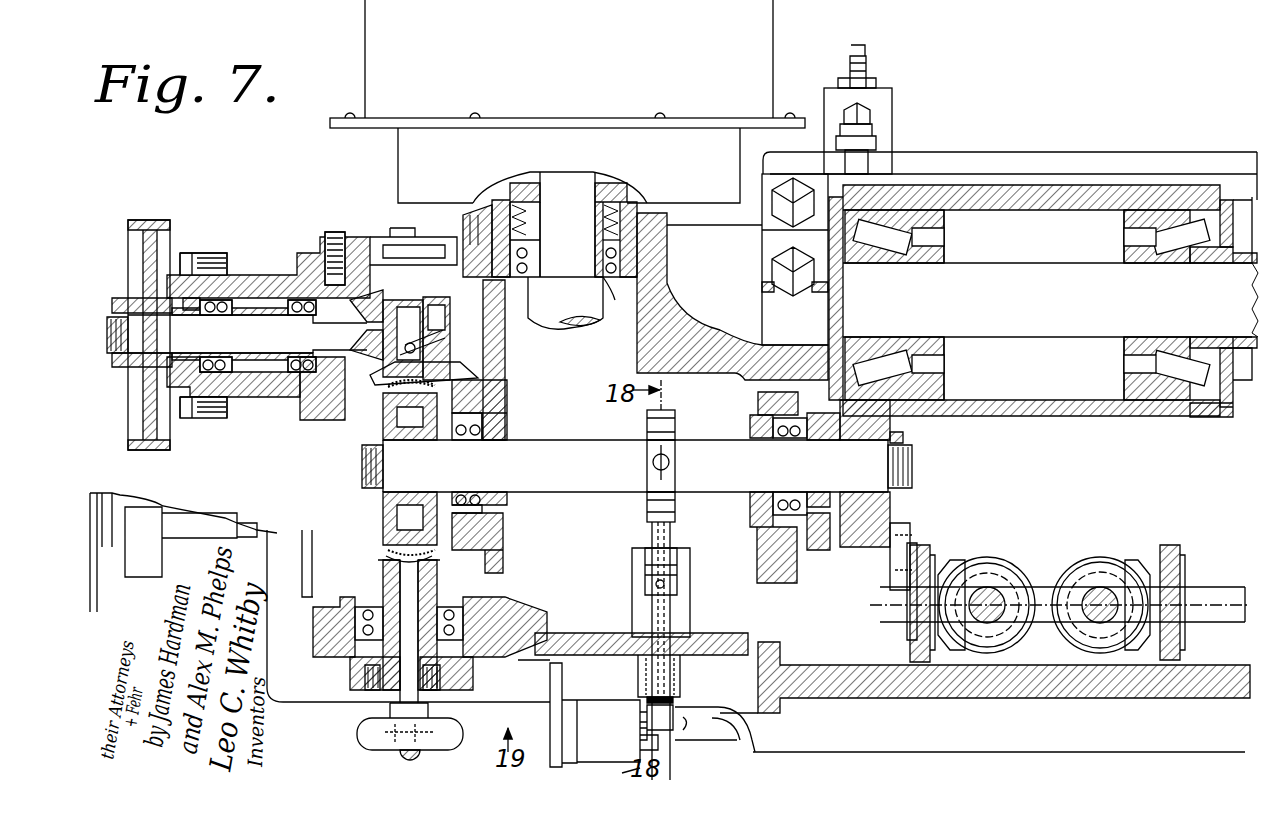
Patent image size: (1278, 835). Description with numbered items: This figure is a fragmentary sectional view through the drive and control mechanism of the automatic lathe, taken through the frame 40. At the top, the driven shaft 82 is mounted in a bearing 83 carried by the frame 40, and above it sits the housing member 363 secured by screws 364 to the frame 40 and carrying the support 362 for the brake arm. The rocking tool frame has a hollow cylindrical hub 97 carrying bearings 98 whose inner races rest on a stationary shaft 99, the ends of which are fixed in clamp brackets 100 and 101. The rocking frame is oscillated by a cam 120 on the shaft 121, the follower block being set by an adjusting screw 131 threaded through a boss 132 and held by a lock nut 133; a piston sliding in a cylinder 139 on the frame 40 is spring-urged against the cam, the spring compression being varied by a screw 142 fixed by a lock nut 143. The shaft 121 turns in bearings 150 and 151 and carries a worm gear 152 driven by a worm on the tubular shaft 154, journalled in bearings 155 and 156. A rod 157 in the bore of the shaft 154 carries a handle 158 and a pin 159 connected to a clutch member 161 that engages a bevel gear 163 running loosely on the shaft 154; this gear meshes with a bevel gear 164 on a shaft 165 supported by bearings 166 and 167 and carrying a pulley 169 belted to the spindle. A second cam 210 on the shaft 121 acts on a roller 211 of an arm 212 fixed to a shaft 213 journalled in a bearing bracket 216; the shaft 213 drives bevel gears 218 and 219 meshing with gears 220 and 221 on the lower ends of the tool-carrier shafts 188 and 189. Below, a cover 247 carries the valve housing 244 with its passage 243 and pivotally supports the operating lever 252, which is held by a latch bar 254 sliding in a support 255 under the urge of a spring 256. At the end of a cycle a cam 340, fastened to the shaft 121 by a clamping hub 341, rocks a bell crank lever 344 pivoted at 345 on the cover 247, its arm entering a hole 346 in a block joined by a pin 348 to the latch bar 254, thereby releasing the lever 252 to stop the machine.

The frame 40 is at (500, 372).
The shaft 82 is at (566, 188).
The bearing 83 is at (618, 293).
The hollow cylindrical hub 97 is at (1012, 186).
The bearings 98 is at (872, 355).
The stationary shaft 99 is at (1030, 268).
The clamp bracket 100 is at (770, 302).
The clamp bracket 101 is at (1245, 380).
The cam 120 is at (840, 547).
The shaft 121 is at (572, 484).
The adjusting screw 131 is at (870, 118).
The boss 132 is at (870, 168).
The lock nut 133 is at (870, 146).
The cylinder 139 is at (880, 100).
The screw 142 is at (862, 48).
The lock nut 143 is at (868, 78).
The bearing 150 is at (500, 425).
The bearing 151 is at (758, 522).
The worm gear 152 is at (410, 513).
The shaft 154 is at (385, 565).
The bearing 155 is at (462, 246).
The bearing 156 is at (456, 604).
The rod 157 is at (405, 582).
The handle 158 is at (368, 740).
The pin 159 is at (415, 345).
The clutch member 161 is at (432, 343).
The bevel gear 163 is at (444, 370).
The bevel gear 164 is at (362, 305).
The shaft 165 is at (232, 330).
The bearing 166 is at (205, 300).
The bearing 167 is at (293, 300).
The pulley 169 is at (166, 224).
The shaft 188 is at (1098, 592).
The shaft 189 is at (986, 592).
The cam 210 is at (900, 434).
The roller 211 is at (882, 565).
The arm 212 is at (898, 538).
The shaft 213 is at (1046, 620).
The bearing bracket 216 is at (925, 545).
The bevel gear 218 is at (1140, 562).
The bevel gear 219 is at (952, 560).
The gear 220 is at (1120, 560).
The gear 221 is at (1018, 566).
The passage 243 is at (670, 462).
The valve housing 244 is at (600, 708).
The cover 247 is at (613, 638).
The operating lever 252 is at (705, 728).
The latch bar 254 is at (676, 742).
The support 255 is at (686, 612).
The spring 256 is at (682, 665).
The cam 340 is at (672, 512).
The clamping hub 341 is at (676, 430).
The bell crank lever 344 is at (650, 540).
The pivot 345 is at (670, 558).
The hole 346 is at (670, 572).
The pin 348 is at (655, 583).
The support 362 is at (612, 196).
The housing member 363 is at (773, 78).
The screws 364 is at (480, 222).